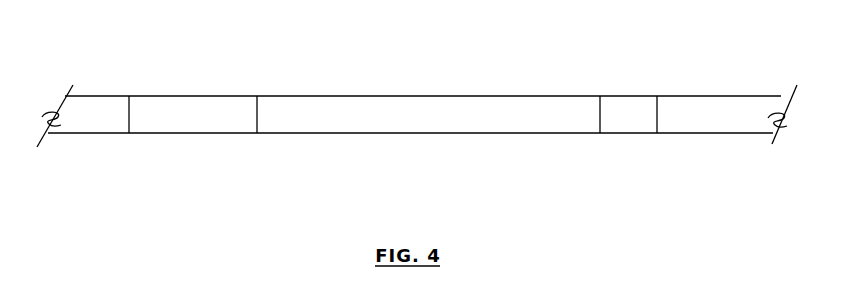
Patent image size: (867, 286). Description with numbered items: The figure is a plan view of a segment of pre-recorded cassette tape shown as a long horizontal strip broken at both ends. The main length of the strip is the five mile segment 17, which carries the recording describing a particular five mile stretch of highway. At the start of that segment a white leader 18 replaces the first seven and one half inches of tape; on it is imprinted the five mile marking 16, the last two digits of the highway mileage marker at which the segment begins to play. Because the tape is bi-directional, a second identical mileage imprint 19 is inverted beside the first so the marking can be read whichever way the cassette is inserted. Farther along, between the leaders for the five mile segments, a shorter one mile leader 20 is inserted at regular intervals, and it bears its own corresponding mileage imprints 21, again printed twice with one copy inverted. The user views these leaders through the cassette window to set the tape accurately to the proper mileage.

The five mile marking 16 is at (153, 110).
The five mile segment 17 is at (432, 108).
The white leader 18 is at (193, 121).
The mileage imprints 19 is at (243, 105).
The one mile leaders 20 is at (634, 117).
The mileage imprints 21 is at (608, 105).